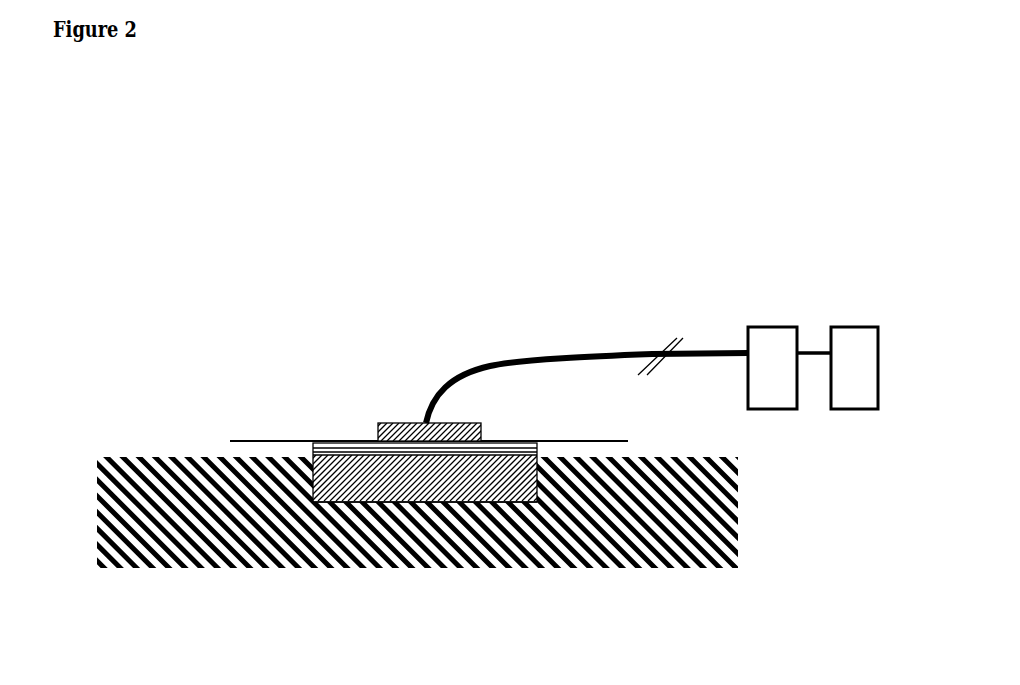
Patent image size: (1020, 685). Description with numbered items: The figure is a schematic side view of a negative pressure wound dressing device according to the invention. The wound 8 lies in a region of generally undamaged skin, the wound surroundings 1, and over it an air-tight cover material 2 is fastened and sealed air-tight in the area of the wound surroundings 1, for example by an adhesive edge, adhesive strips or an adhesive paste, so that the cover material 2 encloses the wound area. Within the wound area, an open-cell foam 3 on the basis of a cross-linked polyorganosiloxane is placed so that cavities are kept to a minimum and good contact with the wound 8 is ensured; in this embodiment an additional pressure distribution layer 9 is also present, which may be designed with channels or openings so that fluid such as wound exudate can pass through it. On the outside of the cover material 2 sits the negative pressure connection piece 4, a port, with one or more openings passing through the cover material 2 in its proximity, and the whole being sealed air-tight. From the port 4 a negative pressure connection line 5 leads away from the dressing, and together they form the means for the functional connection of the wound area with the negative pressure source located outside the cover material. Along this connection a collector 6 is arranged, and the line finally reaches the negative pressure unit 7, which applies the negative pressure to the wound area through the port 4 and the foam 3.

The wound surroundings 1 is at (139, 447).
The air-tight cover material 2 is at (243, 437).
The open-cell polysiloxane foam 3 is at (327, 455).
The negative pressure connection piece 4 is at (386, 421).
The negative pressure connection line 5 is at (557, 355).
The collector 6 is at (767, 327).
The negative pressure unit 7 is at (857, 327).
The wound 8 is at (348, 503).
The pressure distribution layer 9 is at (350, 453).